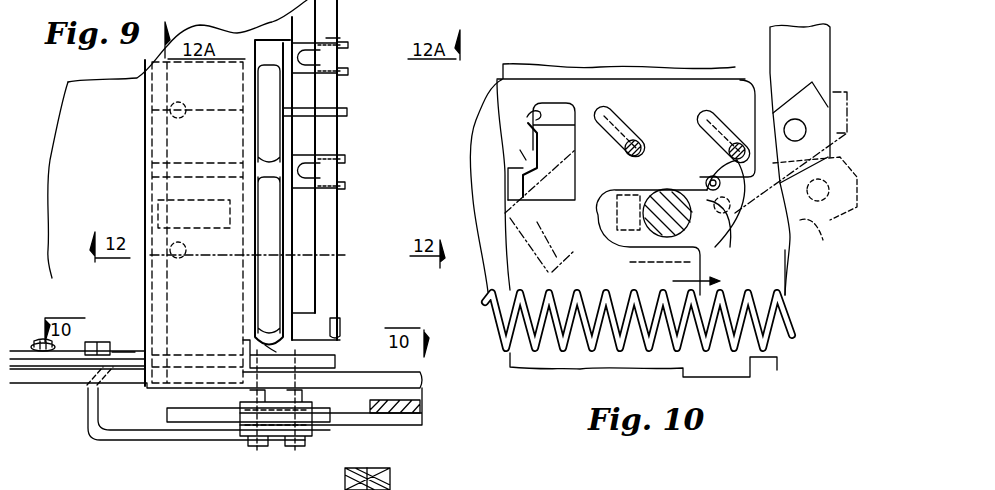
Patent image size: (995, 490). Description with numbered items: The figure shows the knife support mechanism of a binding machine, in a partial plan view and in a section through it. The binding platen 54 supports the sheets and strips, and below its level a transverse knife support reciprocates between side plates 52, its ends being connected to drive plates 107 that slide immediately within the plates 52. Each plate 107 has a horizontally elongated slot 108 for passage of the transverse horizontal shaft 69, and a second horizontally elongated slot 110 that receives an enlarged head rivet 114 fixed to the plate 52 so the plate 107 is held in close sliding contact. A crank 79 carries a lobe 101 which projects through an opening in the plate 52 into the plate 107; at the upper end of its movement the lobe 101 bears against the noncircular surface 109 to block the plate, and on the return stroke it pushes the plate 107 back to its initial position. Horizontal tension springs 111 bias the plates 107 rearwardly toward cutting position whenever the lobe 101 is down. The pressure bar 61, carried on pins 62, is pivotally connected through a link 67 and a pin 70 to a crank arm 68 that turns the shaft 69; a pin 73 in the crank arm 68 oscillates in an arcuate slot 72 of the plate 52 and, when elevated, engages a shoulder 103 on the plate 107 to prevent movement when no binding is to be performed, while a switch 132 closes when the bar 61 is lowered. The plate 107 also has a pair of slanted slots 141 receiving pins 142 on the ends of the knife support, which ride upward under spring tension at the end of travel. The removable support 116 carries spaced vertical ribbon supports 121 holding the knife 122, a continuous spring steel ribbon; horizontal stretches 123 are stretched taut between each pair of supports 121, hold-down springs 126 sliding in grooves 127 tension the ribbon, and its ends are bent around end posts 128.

In FIG. 9, the plate 52 is at (62, 387).
In FIG. 10, the plate 52 is at (558, 72).
In FIG. 9, the binding platen 54 is at (105, 203).
In FIG. 9, the pressure bar 61 is at (388, 466).
In FIG. 9, the pins 62 is at (399, 479).
In FIG. 9, the link 67 is at (425, 404).
In FIG. 10, the link 67 is at (810, 55).
In FIG. 9, the crank arm 68 is at (420, 425).
In FIG. 10, the crank arm 68 is at (840, 152).
In FIG. 9, the transverse horizontal shaft 69 is at (267, 153).
In FIG. 10, the transverse horizontal shaft 69 is at (640, 188).
In FIG. 10, the pin 70 is at (805, 130).
In FIG. 10, the arcuate slot 72 is at (726, 231).
In FIG. 9, the pin 73 is at (312, 356).
In FIG. 10, the pin 73 is at (712, 176).
In FIG. 9, the crank 79 is at (140, 440).
In FIG. 10, the crank 79 is at (563, 168).
In FIG. 9, the lobe 101 is at (112, 350).
In FIG. 10, the lobe 101 is at (521, 149).
In FIG. 10, the shoulder 103 is at (708, 178).
In FIG. 9, the drive plate 107 is at (145, 395).
In FIG. 10, the drive plate 107 is at (670, 107).
In FIG. 10, the horizontally elongated slot 108 is at (645, 262).
In FIG. 10, the surface 109 is at (530, 115).
In FIG. 9, the horizontally elongated slot 110 is at (80, 348).
In FIG. 10, the horizontal tension springs 111 is at (577, 370).
In FIG. 9, the enlarged head rivet 114 is at (40, 343).
In FIG. 9, the removable support 116 is at (295, 210).
In FIG. 9, the vertical ribbon supports 121 is at (348, 49).
In FIG. 9, the knife 122 is at (330, 275).
In FIG. 9, the horizontal stretch 123 is at (330, 58).
In FIG. 9, the hold-down springs 126 is at (347, 110).
In FIG. 9, the grooves 127 is at (198, 104).
In FIG. 9, the end posts 128 is at (343, 318).
In FIG. 9, the switch 132 is at (280, 436).
In FIG. 10, the slanted slots 141 is at (624, 118).
In FIG. 9, the pins 142 is at (276, 352).
In FIG. 10, the pins 142 is at (624, 152).